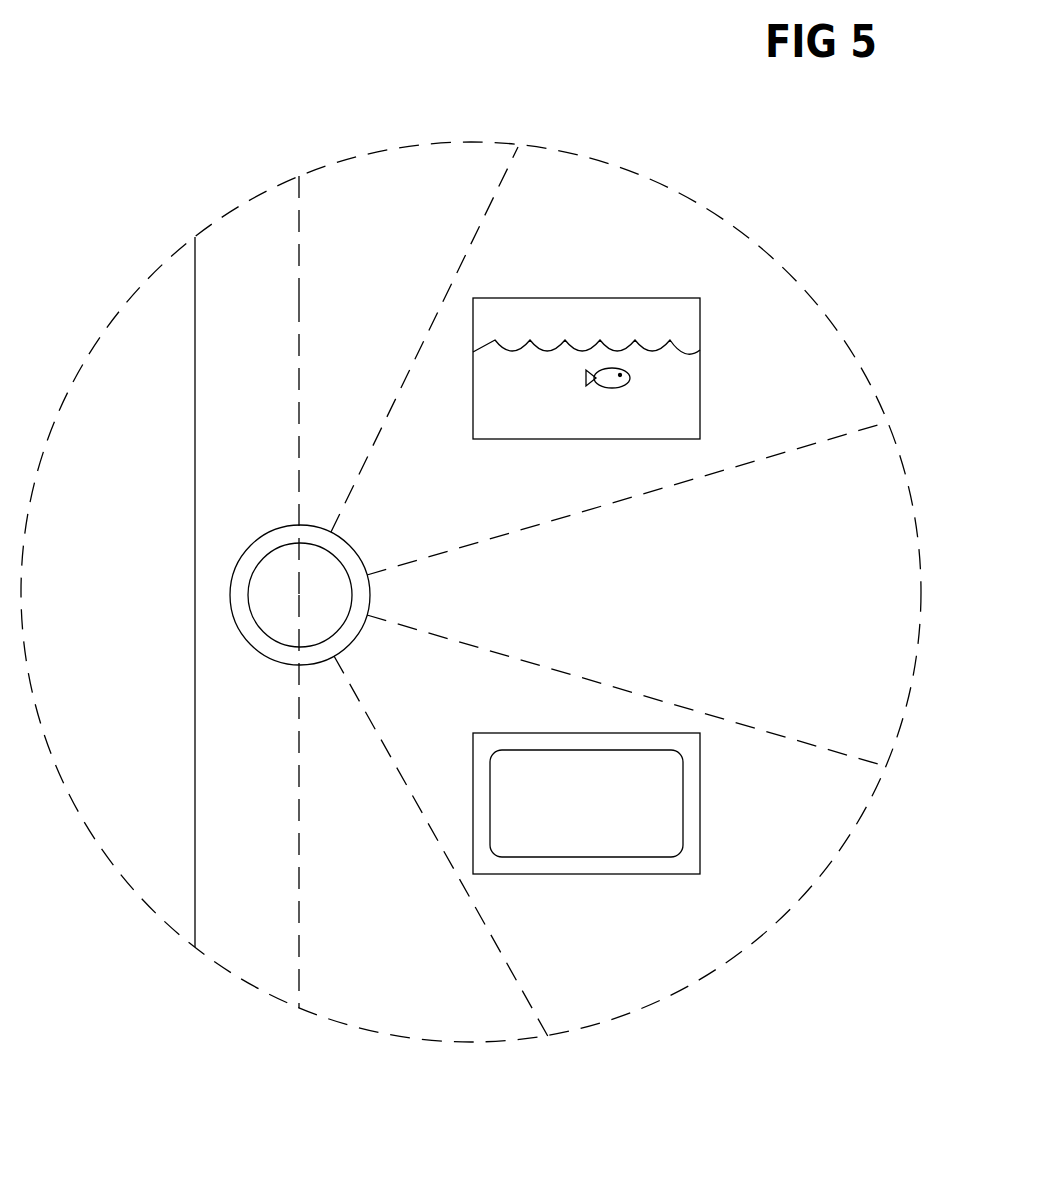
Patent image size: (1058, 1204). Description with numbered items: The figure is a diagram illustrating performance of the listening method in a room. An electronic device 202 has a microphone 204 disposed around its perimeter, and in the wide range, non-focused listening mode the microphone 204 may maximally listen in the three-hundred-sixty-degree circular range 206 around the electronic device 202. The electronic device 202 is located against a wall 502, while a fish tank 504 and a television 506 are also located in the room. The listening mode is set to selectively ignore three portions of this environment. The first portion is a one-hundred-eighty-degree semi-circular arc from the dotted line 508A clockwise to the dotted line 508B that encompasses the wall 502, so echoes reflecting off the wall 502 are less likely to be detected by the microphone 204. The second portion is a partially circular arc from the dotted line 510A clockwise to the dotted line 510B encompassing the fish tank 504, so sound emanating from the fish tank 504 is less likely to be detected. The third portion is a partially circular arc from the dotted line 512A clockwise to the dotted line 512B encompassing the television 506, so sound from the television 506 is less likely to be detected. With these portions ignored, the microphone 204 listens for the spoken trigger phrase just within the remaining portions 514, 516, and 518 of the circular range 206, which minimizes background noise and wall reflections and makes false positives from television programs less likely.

The electronic device 202 is at (281, 607).
The microphone 204 is at (268, 527).
The 360-degree circular range 206 is at (299, 177).
The wall 502 is at (197, 323).
The fish tank 504 is at (689, 334).
The television 506 is at (604, 819).
The dotted line 508A is at (298, 790).
The dotted line 508B is at (299, 402).
The dotted line 510A is at (477, 232).
The dotted line 510B is at (628, 499).
The dotted line 512A is at (578, 676).
The dotted line 512B is at (472, 900).
The portion 514 is at (391, 284).
The portion 516 is at (756, 612).
The portion 518 is at (408, 979).